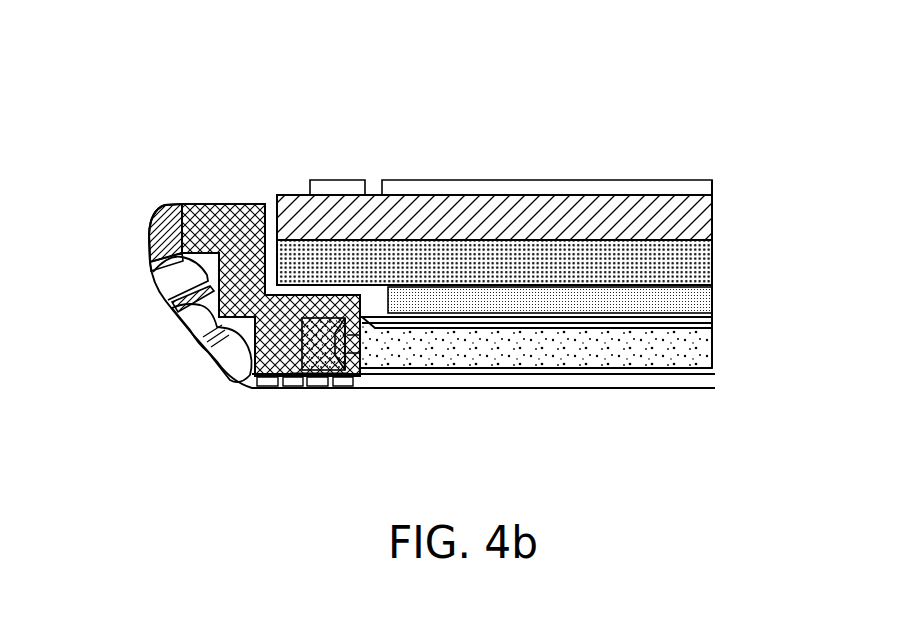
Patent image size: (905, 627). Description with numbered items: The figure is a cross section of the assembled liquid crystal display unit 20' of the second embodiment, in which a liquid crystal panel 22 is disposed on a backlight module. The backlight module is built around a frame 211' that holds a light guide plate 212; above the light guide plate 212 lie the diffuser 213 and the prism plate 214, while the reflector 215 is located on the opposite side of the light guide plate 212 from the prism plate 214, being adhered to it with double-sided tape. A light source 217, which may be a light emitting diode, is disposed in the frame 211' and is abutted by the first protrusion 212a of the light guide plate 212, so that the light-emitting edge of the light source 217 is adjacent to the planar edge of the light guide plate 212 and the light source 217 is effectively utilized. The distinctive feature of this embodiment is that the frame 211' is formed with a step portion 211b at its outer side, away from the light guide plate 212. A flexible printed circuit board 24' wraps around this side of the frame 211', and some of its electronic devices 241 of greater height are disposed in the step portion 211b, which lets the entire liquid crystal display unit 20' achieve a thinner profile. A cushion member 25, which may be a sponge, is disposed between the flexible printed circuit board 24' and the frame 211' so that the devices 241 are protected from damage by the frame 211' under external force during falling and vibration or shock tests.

The liquid crystal display unit 20' is at (241, 206).
The step portion 211b is at (216, 268).
The frame 211' is at (271, 261).
The flexible printed circuit board 24' is at (117, 233).
The cushion member 25 is at (150, 248).
The electronic devices 241 is at (177, 283).
The liquid crystal panel 22 is at (688, 268).
The prism plate 214 is at (692, 312).
The diffuser 213 is at (703, 325).
The light guide plate 212 is at (698, 343).
The reflector 215 is at (718, 375).
The light source 217 is at (322, 378).
The first protrusion 212a is at (362, 320).